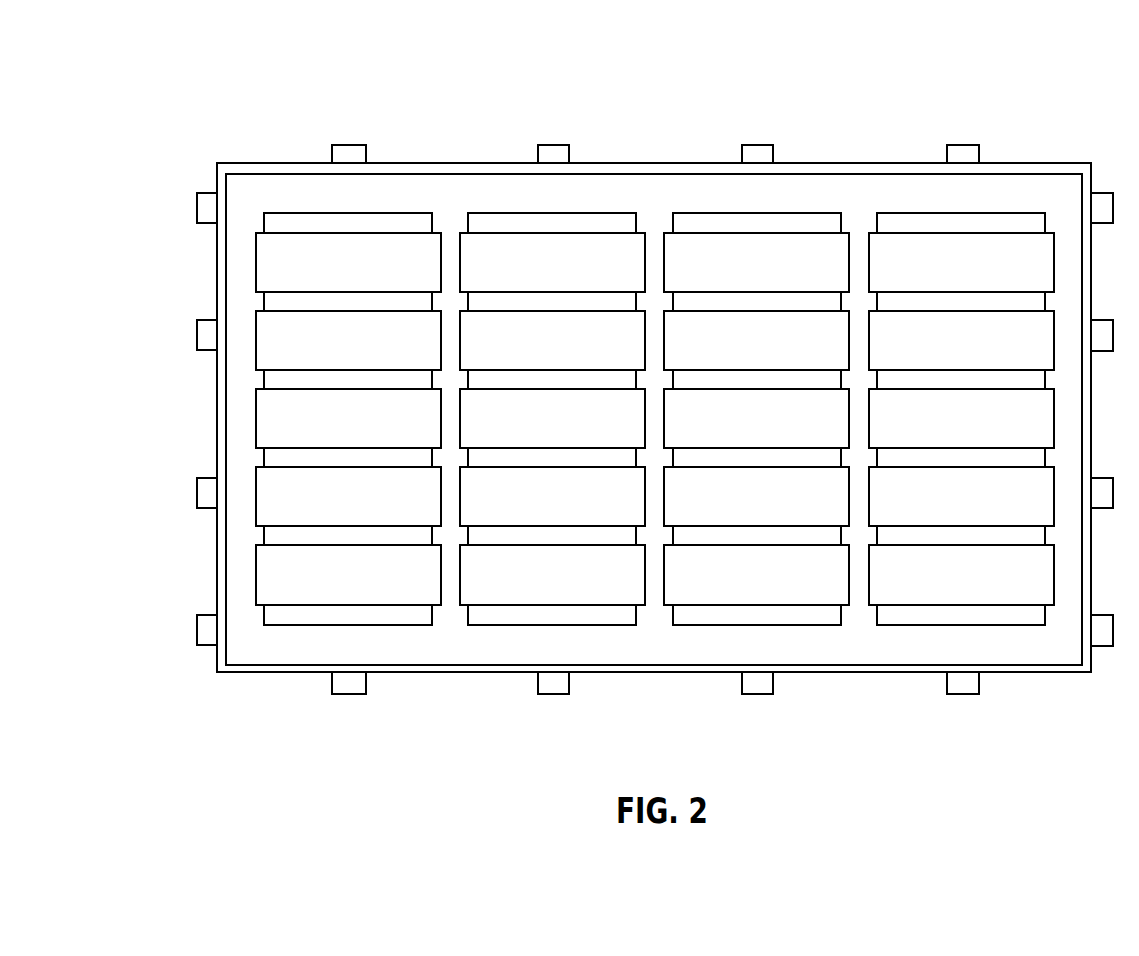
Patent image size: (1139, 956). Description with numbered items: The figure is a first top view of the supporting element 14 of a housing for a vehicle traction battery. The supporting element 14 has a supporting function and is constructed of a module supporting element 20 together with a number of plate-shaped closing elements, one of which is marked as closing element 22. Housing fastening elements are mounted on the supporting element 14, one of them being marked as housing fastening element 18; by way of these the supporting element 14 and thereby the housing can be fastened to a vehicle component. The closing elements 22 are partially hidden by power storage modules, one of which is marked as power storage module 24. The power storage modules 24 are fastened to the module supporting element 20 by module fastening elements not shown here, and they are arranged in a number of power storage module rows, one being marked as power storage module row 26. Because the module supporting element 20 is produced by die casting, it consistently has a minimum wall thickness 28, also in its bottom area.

The supporting element 14 is at (851, 131).
The housing fastening element 18 is at (555, 153).
The module supporting element 20 is at (583, 651).
The closing element 22 is at (389, 617).
The power storage module 24 is at (803, 590).
The power storage module row 26 is at (382, 202).
The minimum wall thickness 28 is at (224, 402).